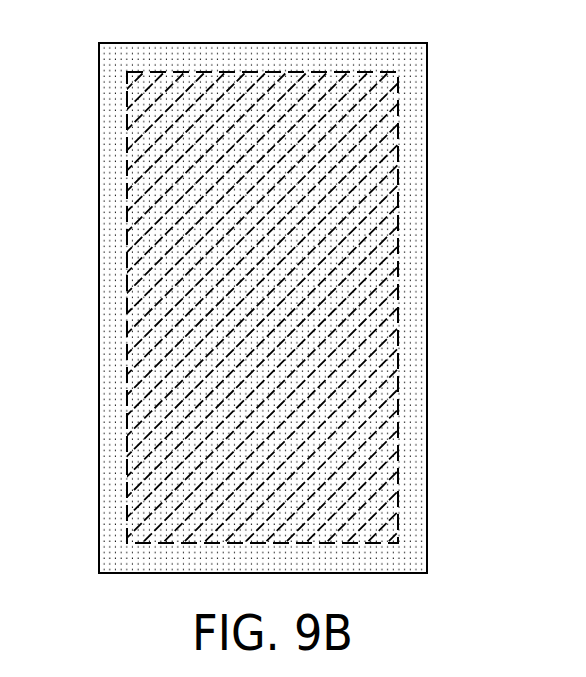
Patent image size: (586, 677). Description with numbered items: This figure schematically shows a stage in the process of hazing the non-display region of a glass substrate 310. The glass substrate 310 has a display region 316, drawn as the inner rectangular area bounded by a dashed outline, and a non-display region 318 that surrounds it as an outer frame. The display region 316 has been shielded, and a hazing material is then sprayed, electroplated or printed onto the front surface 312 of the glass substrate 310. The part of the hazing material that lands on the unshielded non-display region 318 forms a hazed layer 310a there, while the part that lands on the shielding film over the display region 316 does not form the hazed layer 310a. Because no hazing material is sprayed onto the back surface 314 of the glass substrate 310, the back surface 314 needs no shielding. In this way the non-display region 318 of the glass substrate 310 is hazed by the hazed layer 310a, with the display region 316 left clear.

The glass substrate 310 is at (453, 47).
The hazed layer 310a is at (427, 91).
The front surface 312 is at (380, 218).
The back surface 314 is at (384, 298).
The display region 316 is at (129, 288).
The non-display region 318 is at (117, 338).